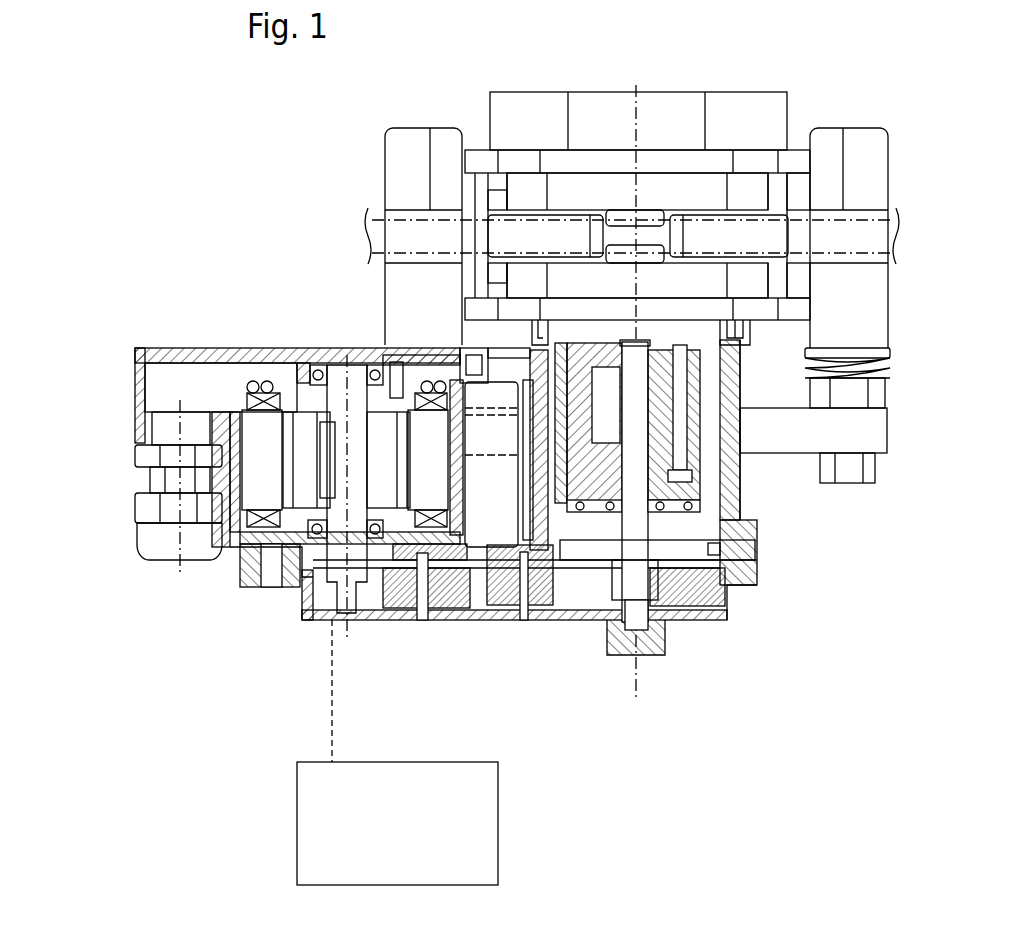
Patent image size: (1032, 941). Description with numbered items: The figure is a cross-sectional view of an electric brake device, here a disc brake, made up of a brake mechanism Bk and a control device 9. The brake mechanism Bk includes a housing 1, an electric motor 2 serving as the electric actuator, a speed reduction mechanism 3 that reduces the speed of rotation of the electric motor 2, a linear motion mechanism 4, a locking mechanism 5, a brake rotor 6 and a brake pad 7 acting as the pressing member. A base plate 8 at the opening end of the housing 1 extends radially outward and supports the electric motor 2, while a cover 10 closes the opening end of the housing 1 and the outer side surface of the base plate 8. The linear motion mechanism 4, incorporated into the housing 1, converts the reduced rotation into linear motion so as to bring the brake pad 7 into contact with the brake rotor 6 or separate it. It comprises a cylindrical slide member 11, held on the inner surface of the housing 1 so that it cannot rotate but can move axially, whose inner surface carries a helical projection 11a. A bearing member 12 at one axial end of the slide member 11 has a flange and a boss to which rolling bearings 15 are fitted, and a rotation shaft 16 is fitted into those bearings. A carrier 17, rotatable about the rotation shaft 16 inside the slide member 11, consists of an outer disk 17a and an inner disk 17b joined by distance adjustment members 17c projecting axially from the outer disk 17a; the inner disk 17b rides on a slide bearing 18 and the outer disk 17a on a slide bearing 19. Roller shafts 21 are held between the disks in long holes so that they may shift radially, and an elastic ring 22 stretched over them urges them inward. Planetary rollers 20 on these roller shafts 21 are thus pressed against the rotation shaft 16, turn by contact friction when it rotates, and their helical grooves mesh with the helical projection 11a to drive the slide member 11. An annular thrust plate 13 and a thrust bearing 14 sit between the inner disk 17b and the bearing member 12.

The brake mechanism Bk is at (297, 185).
The housing 1 is at (742, 532).
The electric motor 2 is at (268, 388).
The speed reduction mechanism 3 is at (547, 630).
The linear motion mechanism 4 is at (700, 580).
The locking mechanism 5 is at (462, 570).
The brake rotor 6 is at (906, 217).
The brake pad 7 is at (745, 280).
The base plate 8 is at (242, 560).
The control device 9 is at (297, 785).
The cover 10 is at (670, 630).
The slide member 11 is at (742, 357).
The helical projection 11a is at (700, 350).
The bearing member 12 is at (735, 555).
The annular thrust plate 13 is at (742, 480).
The thrust bearing 14 is at (745, 522).
The rolling bearing 15 is at (712, 575).
The rotation shaft 16 is at (725, 335).
The carrier 17 is at (505, 348).
The outer disk 17a is at (598, 342).
The inner disk 17b is at (600, 625).
The distance adjustment member 17c is at (387, 346).
The slide bearing 18 is at (722, 425).
The slide bearing 19 is at (735, 318).
The planetary roller 20 is at (642, 620).
The roller shaft 21 is at (745, 340).
The elastic ring 22 is at (577, 345).